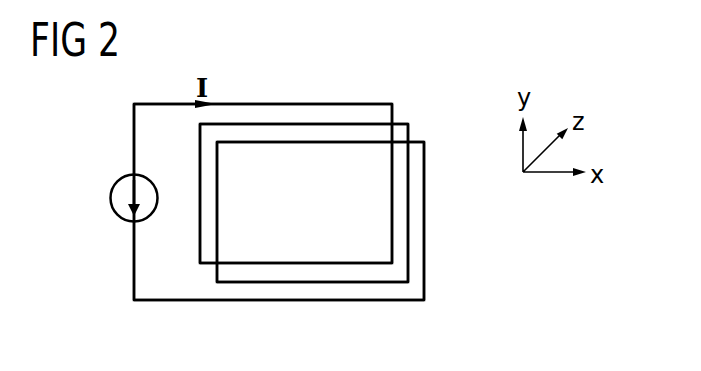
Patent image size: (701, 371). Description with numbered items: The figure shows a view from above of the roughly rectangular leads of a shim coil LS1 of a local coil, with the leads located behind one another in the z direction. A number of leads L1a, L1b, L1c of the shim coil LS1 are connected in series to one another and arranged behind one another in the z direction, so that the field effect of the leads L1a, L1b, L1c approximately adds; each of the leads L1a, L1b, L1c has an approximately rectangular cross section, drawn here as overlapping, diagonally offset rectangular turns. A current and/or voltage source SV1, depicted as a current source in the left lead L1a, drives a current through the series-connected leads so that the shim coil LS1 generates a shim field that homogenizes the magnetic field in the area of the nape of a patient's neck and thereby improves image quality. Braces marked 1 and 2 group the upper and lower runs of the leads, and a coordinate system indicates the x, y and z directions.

The shim coil LS1 is at (500, 261).
The first conductor section group (upper) 1 is at (440, 93).
The second conductor section group (lower) 2 is at (440, 252).
The lead L1a is at (134, 266).
The lead L1b is at (200, 138).
The lead L1c is at (217, 173).
The current and/or voltage source SV1 is at (110, 197).